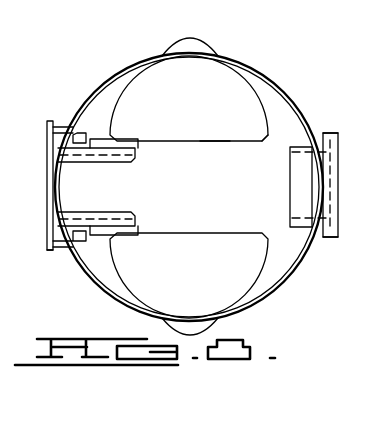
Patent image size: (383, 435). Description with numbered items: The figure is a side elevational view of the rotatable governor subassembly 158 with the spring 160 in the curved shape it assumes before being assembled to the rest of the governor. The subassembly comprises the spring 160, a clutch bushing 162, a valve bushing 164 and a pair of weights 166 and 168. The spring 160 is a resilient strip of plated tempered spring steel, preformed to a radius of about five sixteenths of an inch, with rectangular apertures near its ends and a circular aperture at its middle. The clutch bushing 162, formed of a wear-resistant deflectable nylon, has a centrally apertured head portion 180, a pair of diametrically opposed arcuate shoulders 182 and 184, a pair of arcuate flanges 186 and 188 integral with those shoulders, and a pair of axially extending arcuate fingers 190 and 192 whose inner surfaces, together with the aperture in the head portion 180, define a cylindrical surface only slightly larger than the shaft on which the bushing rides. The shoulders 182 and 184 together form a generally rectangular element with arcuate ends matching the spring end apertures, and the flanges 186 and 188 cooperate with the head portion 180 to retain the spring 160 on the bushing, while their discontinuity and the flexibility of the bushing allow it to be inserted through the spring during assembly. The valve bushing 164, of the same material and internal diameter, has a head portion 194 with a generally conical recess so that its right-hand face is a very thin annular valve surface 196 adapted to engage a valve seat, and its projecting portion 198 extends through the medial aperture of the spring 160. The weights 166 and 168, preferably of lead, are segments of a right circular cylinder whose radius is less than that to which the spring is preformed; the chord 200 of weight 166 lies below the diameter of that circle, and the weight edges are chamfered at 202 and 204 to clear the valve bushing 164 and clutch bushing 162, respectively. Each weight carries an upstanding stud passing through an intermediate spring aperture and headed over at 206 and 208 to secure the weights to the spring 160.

The rotatable governor subassembly 158 is at (98, 72).
The spring 160 is at (126, 66).
The clutch bushing 162 is at (48, 252).
The valve bushing 164 is at (333, 243).
The weight 166 is at (232, 98).
The weight 168 is at (222, 276).
The head portion 180 is at (47, 127).
The arcuate shoulder 182 is at (60, 127).
The arcuate shoulder 184 is at (60, 250).
The arcuate flange 186 is at (113, 110).
The arcuate flange 188 is at (88, 237).
The arcuate finger 190 is at (137, 153).
The arcuate finger 192 is at (137, 218).
The head portion 194 is at (331, 133).
The valve surface 196 is at (339, 133).
The projecting portion 198 is at (300, 181).
The chord 200 is at (213, 143).
The chamfer 202 is at (274, 138).
The chamfer 204 is at (112, 139).
The headed-over stud 206 is at (198, 44).
The headed-over stud 208 is at (203, 328).